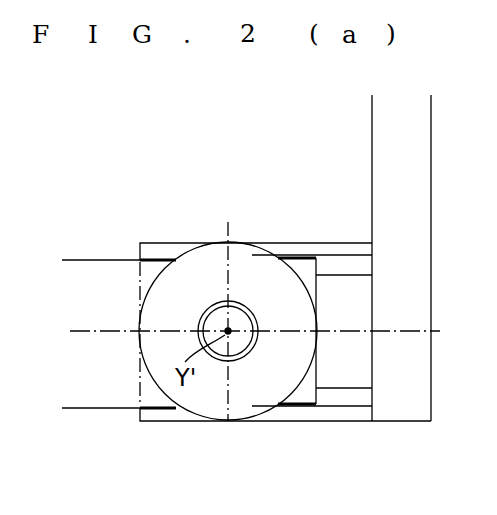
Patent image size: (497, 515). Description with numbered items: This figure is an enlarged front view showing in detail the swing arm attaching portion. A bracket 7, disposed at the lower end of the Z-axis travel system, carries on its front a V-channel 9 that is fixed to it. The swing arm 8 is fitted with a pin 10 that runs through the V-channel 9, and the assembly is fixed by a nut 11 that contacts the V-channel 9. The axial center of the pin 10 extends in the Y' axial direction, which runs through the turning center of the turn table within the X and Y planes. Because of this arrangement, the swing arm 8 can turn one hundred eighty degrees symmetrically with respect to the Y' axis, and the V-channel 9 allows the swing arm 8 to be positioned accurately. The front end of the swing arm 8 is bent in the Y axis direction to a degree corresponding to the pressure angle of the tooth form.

The bracket 7 is at (412, 153).
The swing arm 8 is at (96, 258).
The V-channel 9 is at (308, 393).
The pin 10 is at (241, 316).
The nut 11 is at (213, 242).